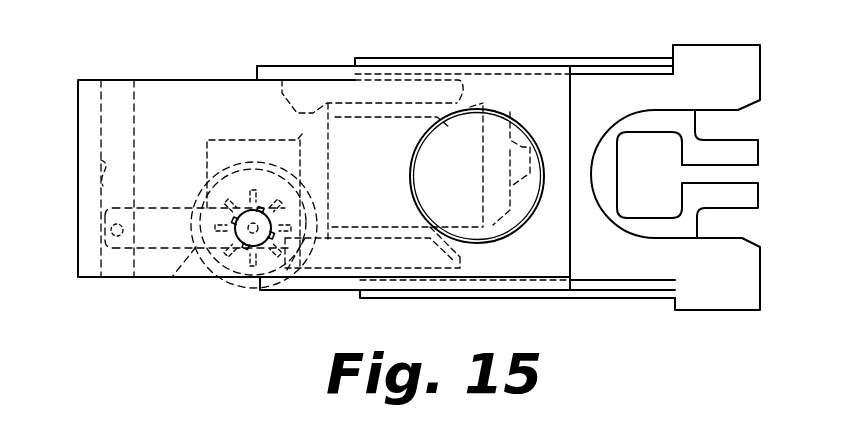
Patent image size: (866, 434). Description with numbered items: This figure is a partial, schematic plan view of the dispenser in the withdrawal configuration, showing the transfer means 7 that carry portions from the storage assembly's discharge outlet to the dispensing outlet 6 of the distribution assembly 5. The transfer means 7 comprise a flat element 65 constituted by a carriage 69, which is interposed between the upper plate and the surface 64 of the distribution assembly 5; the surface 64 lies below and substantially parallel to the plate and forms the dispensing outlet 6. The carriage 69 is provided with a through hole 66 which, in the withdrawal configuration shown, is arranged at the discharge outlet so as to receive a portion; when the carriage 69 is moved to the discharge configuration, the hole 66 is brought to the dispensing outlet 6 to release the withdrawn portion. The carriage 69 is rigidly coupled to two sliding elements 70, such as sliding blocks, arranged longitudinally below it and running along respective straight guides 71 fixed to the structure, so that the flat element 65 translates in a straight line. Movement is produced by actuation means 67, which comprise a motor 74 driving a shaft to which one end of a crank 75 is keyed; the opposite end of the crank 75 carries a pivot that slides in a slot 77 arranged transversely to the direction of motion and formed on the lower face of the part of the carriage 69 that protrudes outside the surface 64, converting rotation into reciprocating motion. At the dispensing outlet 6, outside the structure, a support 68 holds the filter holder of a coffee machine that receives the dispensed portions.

The distribution assembly 5 is at (728, 134).
The dispensing outlet 6 is at (664, 234).
The transfer means 7 is at (113, 80).
The surface 64 is at (735, 291).
The flat element 65 is at (168, 80).
The through hole 66 is at (457, 110).
The actuation means 67 is at (159, 256).
The support 68 is at (740, 194).
The carriage 69 is at (220, 102).
The sliding elements 70 is at (302, 70).
The straight guides 71 is at (602, 78).
The motor 74 is at (243, 252).
The crank 75 is at (160, 225).
The slot 77 is at (98, 182).